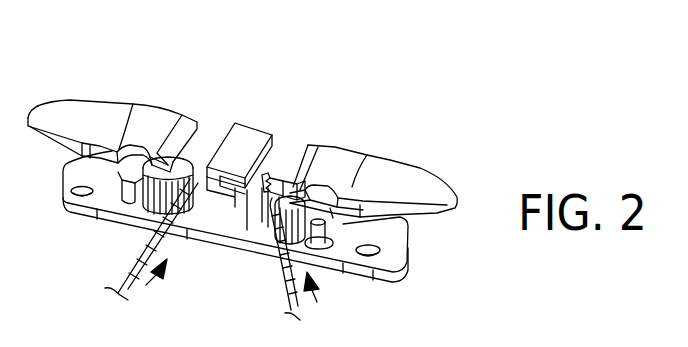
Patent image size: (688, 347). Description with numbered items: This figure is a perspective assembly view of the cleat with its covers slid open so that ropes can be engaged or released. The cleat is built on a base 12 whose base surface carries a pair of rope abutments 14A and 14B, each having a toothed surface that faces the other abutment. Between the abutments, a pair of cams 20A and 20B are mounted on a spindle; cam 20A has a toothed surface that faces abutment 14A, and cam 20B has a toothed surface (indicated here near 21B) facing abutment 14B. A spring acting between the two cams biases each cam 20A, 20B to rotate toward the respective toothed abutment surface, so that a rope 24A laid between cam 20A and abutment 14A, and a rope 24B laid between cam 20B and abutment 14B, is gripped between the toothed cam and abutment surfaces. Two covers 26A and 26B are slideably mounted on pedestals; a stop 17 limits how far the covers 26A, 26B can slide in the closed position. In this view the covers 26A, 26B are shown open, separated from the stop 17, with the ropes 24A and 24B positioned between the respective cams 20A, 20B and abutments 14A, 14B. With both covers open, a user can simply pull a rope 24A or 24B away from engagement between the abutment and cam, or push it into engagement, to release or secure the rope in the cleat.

The base 12 is at (375, 242).
The rope abutment 14A is at (123, 217).
The rope abutment 14B is at (283, 232).
The stop 17 is at (245, 144).
The cam 20A is at (180, 228).
The cam 20B is at (252, 231).
The latch member 21B is at (270, 183).
The rope 24A is at (133, 267).
The rope 24B is at (290, 300).
The cover 26A is at (93, 110).
The cover 26B is at (393, 178).